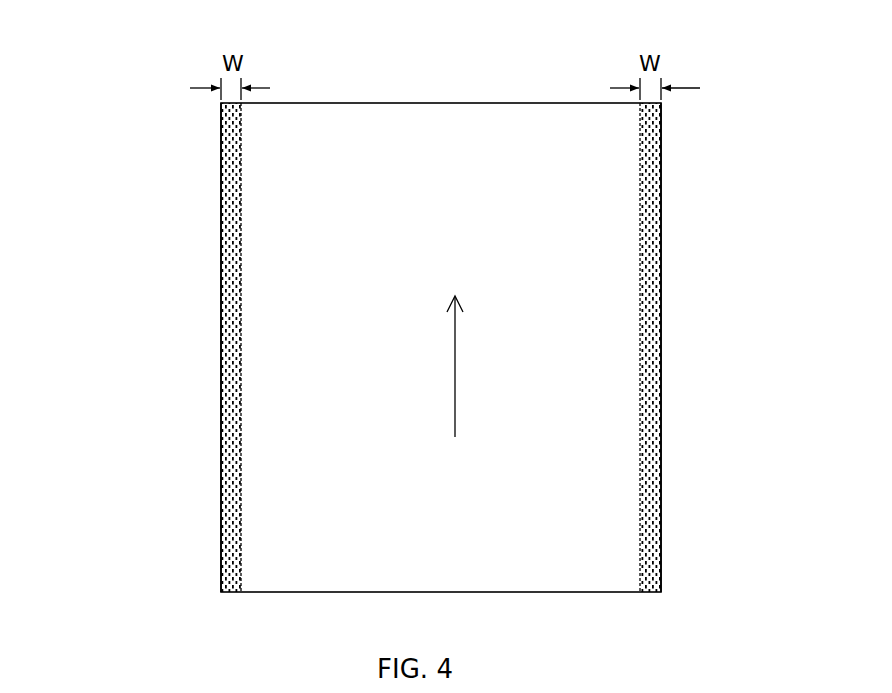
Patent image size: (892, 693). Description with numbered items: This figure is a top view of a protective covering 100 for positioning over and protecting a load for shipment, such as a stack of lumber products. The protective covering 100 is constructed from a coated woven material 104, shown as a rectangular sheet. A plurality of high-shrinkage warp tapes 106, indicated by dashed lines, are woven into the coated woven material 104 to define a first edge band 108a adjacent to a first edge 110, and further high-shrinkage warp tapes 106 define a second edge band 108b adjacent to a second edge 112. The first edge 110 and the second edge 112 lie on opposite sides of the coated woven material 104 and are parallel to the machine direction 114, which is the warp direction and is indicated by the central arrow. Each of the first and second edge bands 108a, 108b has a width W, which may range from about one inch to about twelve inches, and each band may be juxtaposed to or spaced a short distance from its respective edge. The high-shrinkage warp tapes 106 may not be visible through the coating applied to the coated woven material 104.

The protective covering 100 is at (127, 74).
The coated woven material 104 is at (493, 103).
The high-shrinkage warp tapes 106 is at (221, 378).
The first edge band 108a is at (651, 596).
The second edge band 108b is at (228, 596).
The first edge 110 is at (661, 248).
The second edge 112 is at (221, 282).
The machine direction 114 is at (452, 378).